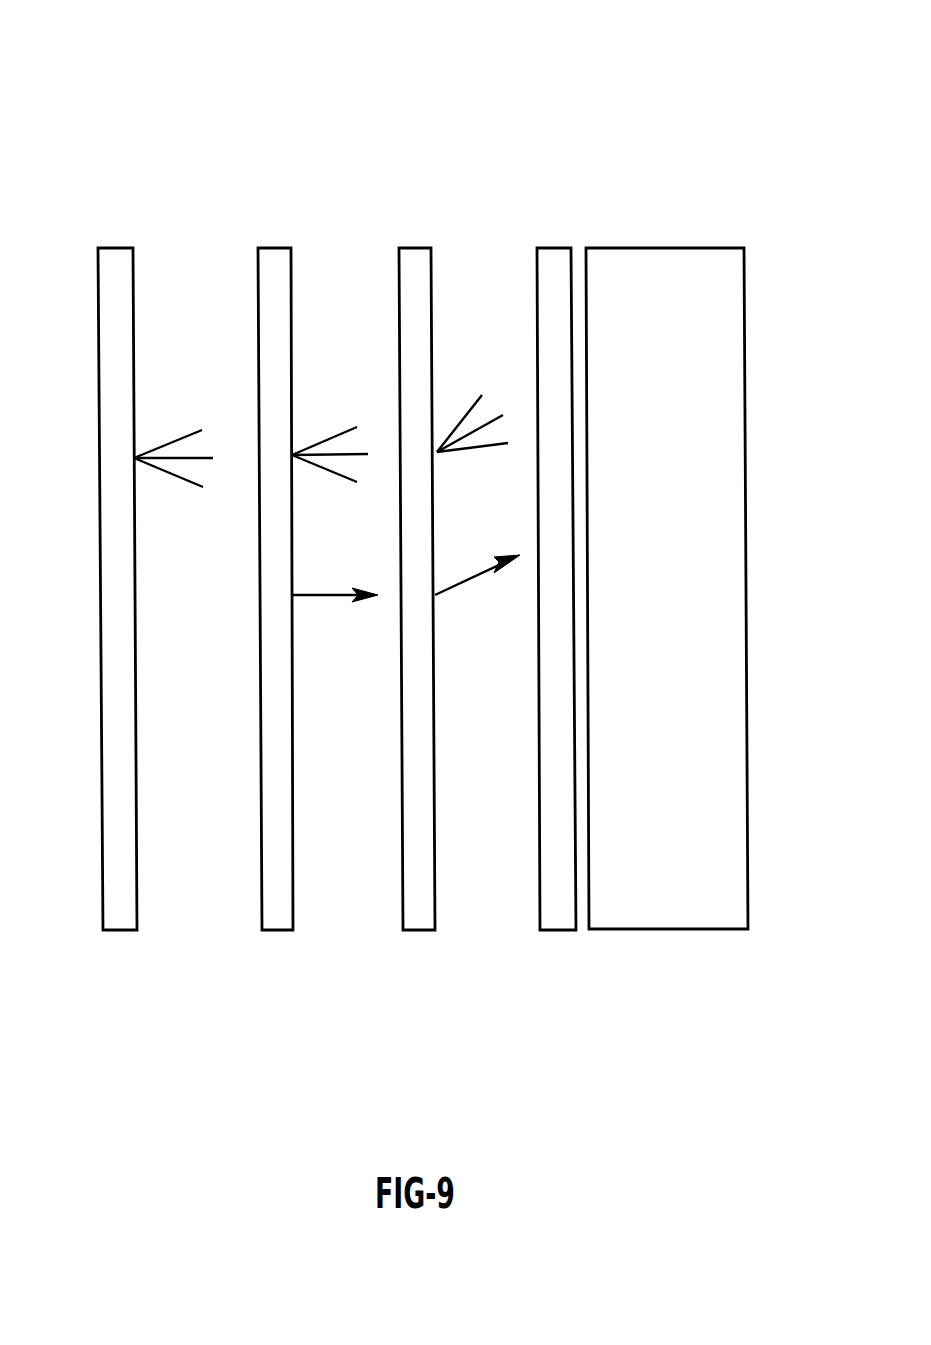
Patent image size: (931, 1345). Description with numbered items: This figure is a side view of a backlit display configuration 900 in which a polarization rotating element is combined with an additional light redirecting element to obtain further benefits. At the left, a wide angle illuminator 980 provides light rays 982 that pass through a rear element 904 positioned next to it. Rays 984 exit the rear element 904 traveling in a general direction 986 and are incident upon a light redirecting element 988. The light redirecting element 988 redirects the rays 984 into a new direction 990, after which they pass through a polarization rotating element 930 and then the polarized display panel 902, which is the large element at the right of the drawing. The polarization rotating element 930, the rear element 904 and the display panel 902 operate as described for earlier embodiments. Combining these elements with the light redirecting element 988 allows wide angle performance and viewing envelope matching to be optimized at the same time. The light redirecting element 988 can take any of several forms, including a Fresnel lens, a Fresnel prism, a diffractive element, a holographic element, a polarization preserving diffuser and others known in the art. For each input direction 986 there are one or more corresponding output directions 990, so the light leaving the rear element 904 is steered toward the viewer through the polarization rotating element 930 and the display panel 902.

The backlit display configuration 900 is at (484, 31).
The wide angle illuminator 980 is at (112, 248).
The light rays 982 is at (173, 434).
The rear element 904 is at (268, 248).
The rays 984 is at (330, 430).
The general direction 986 is at (335, 622).
The light redirecting element 988 is at (420, 248).
The new direction 990 is at (477, 605).
The polarization rotating element 930 is at (560, 248).
The polarized display panel 902 is at (724, 247).